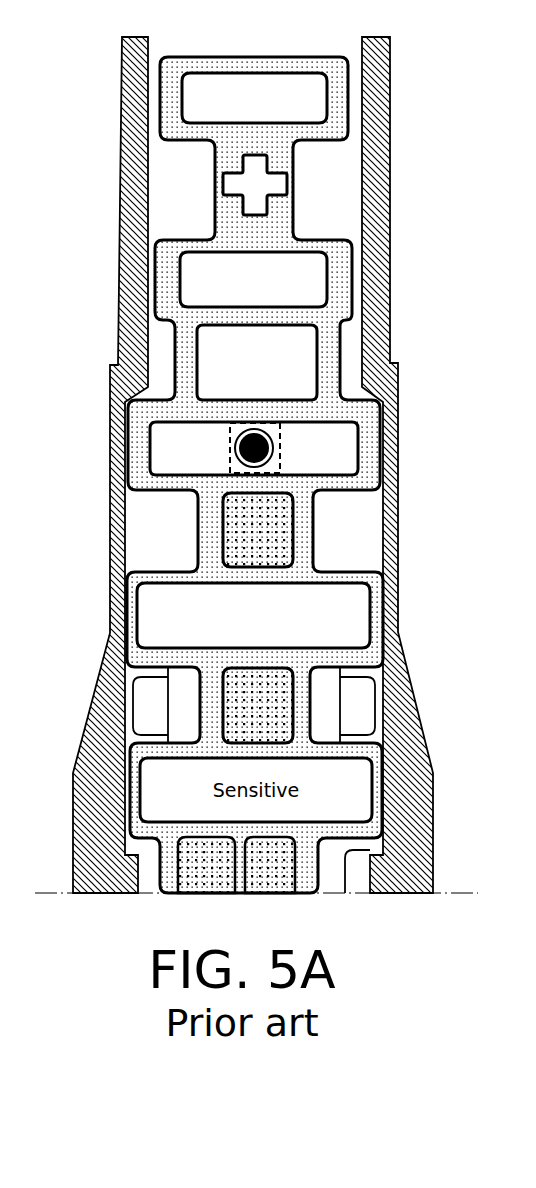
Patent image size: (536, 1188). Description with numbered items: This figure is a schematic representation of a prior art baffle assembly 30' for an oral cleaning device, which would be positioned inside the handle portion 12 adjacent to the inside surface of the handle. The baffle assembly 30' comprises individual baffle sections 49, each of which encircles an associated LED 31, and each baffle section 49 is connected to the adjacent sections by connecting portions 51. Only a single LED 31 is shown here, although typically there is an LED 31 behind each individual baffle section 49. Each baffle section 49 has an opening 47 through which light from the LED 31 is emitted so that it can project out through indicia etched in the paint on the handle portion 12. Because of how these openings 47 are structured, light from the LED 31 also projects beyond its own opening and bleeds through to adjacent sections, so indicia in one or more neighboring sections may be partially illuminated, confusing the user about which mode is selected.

The handle portion 12 is at (391, 69).
The baffle assembly 30' is at (355, 114).
The baffle section 49 is at (345, 268).
The LED 31 is at (228, 457).
The connecting portion 51 is at (207, 523).
The opening 47 is at (358, 602).